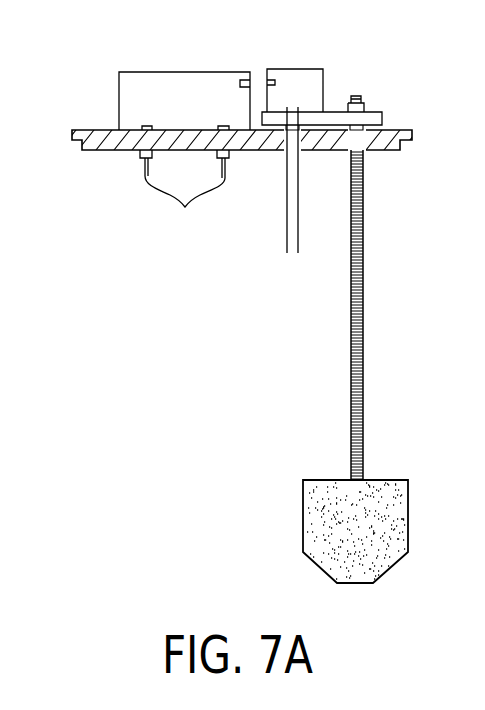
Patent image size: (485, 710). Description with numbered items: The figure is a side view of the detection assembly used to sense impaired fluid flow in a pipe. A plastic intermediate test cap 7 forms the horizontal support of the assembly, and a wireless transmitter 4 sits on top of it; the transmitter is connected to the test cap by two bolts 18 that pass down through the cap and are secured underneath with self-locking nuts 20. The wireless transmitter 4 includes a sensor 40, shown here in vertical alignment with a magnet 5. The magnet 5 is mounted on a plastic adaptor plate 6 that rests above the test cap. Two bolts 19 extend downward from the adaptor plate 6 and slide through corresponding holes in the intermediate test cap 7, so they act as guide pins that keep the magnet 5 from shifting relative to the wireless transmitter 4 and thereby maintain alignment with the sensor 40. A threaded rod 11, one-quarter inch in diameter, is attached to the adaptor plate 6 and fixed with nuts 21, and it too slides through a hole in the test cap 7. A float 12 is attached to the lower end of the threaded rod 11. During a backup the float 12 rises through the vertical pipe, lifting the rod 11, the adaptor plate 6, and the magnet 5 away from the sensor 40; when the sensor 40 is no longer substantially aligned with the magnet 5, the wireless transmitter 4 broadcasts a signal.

The wireless transmitter 4 is at (151, 72).
The magnet 5 is at (312, 69).
The plastic adaptor plate 6 is at (382, 120).
The plastic intermediate test cap 7 is at (72, 130).
The threaded rod 11 is at (351, 372).
The float 12 is at (303, 532).
The bolts 18 is at (185, 207).
The bolts 19 is at (298, 212).
The self-locking nuts 20 is at (140, 153).
The nuts 21 is at (362, 100).
The sensor 40 is at (241, 82).